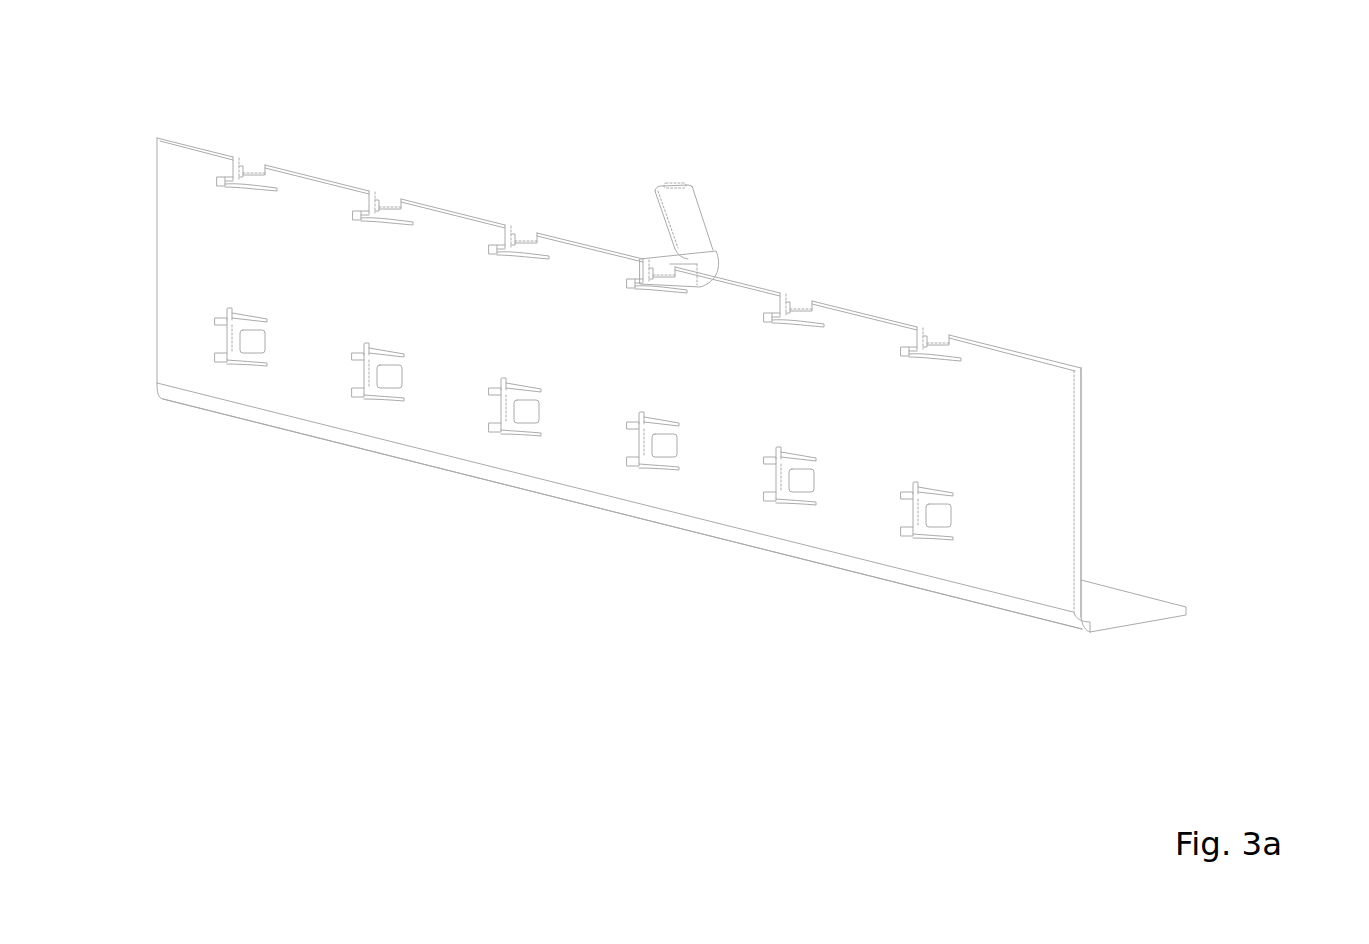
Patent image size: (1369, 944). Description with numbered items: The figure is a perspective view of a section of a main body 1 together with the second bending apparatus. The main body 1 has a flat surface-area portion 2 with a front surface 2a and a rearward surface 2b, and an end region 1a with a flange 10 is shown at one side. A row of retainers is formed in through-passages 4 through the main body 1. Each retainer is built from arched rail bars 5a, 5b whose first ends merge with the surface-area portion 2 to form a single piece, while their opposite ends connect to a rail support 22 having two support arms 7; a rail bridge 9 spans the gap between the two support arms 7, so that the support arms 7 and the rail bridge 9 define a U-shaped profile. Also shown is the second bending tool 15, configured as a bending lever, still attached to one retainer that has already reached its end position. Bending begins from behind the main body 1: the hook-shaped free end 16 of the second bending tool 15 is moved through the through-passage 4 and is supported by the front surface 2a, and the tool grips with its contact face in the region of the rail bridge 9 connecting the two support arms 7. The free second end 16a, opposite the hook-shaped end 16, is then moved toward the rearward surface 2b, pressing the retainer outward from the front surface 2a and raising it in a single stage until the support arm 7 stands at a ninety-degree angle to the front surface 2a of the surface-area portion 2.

The main body 1 is at (735, 392).
The rail end region 1a is at (1158, 371).
The surface-area portion 2 is at (662, 385).
The front surface 2a is at (1050, 503).
The rearward surface 2b is at (892, 251).
The through-passage 4 is at (584, 531).
The arched rail bar 5a is at (812, 495).
The arched rail bar 5b is at (810, 463).
The support arm 7 is at (774, 466).
The rail bridge 9 is at (788, 484).
The flange 10 is at (1132, 398).
The second bending tool 15 is at (736, 158).
The hook-shaped free end 16 is at (683, 277).
The free second end 16a is at (663, 187).
The rail support 22 is at (762, 600).